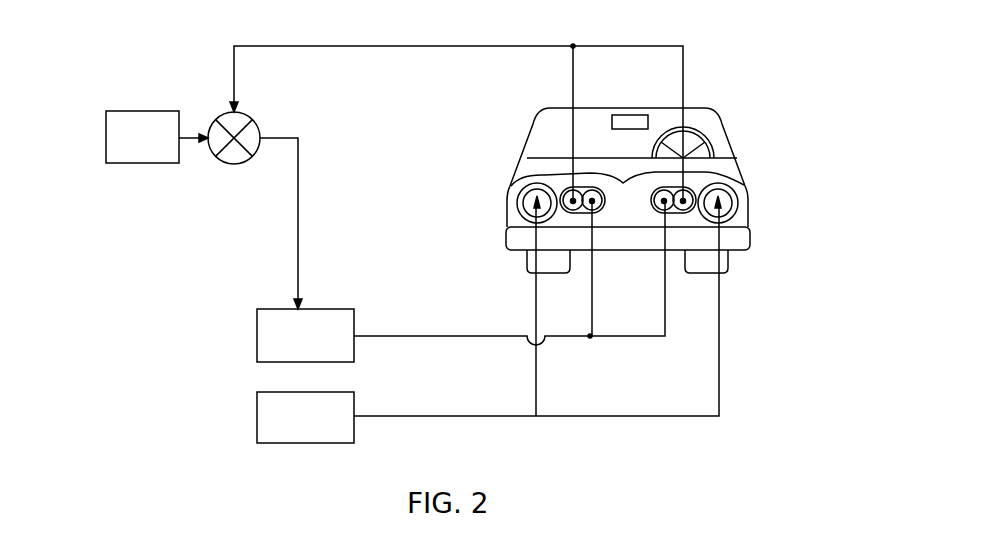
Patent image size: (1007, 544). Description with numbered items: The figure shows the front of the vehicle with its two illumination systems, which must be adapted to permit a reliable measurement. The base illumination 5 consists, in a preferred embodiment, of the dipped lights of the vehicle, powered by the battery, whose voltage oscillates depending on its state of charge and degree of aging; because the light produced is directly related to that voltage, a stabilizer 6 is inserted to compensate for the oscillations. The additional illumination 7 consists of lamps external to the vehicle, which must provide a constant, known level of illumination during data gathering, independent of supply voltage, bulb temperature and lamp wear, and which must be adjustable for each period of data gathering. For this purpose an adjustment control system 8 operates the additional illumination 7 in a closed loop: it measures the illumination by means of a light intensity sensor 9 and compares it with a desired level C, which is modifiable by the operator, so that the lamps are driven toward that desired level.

The base illumination 5 is at (527, 205).
The stabilizer for the base illumination 6 is at (270, 415).
The additional illumination 7 is at (658, 190).
The adjustment and control of the additional illumination 8 is at (270, 326).
The light intensity sensor 9 is at (541, 185).
The desired level C is at (142, 137).